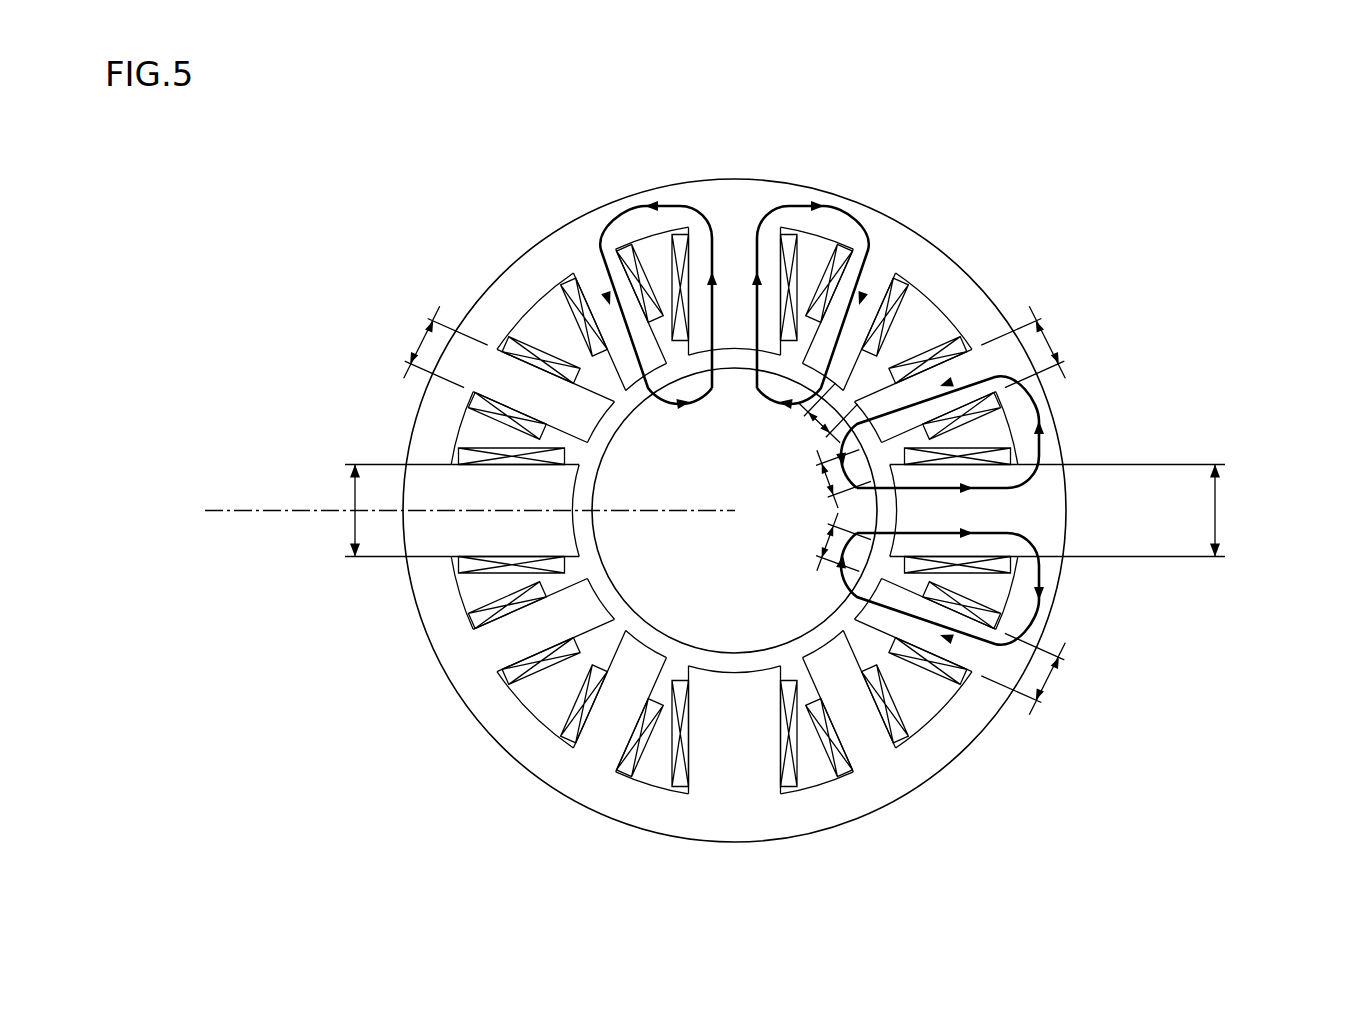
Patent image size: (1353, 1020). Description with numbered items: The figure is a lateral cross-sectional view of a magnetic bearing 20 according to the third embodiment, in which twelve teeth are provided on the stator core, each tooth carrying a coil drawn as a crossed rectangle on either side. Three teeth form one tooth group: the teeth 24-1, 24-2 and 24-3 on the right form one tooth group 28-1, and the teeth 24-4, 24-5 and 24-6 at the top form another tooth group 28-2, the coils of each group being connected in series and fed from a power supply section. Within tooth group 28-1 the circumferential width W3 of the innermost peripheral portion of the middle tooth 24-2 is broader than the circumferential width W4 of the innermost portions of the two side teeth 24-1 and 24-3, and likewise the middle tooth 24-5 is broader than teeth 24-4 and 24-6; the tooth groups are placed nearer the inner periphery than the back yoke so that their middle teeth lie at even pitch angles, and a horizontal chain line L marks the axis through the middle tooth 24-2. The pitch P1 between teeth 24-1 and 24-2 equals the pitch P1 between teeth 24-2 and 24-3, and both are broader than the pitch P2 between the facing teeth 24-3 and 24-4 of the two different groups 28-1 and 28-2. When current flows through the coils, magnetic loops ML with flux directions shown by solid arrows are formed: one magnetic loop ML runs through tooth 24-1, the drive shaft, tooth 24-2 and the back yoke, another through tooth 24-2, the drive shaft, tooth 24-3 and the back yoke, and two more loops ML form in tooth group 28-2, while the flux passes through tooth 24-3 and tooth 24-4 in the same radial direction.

The magnetic bearing 20 is at (960, 140).
The tooth 24-1 is at (945, 652).
The tooth 24-2 is at (985, 510).
The tooth 24-3 is at (963, 340).
The tooth 24-4 is at (873, 281).
The tooth 24-5 is at (735, 290).
The tooth 24-6 is at (598, 288).
The tooth group 28-1 is at (1083, 506).
The tooth group 28-2 is at (790, 141).
The magnetic loop ML is at (623, 220).
The circumferential width of the middle tooth W3 is at (352, 522).
The circumferential width of the side teeth W4 is at (408, 348).
The pitch between adjacent teeth in a tooth group P1 is at (820, 478).
The pitch between facing teeth of adjacent tooth groups P2 is at (812, 424).
The center line L is at (228, 508).